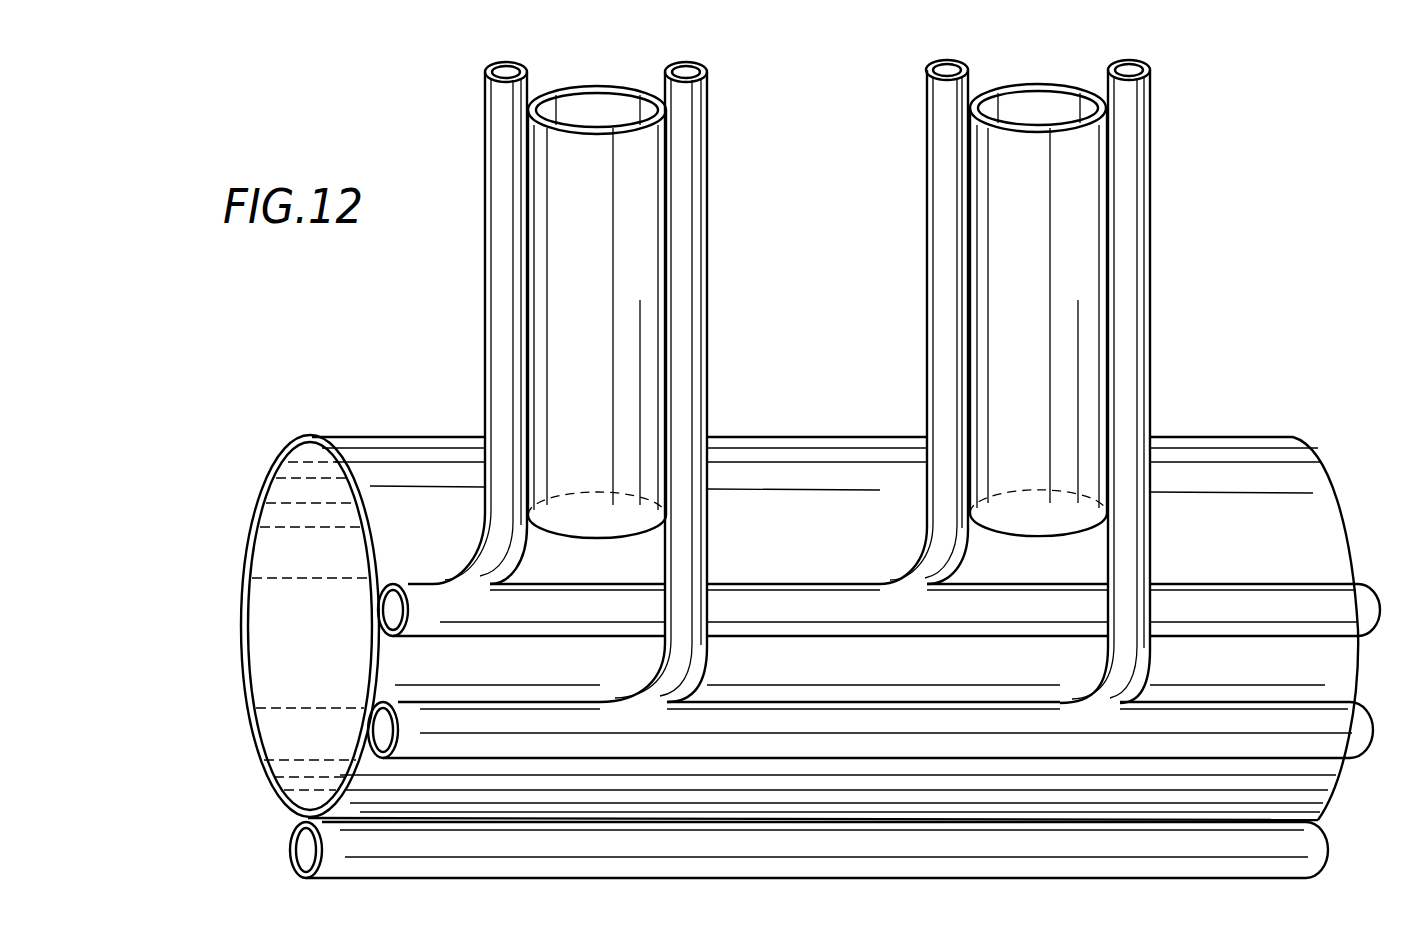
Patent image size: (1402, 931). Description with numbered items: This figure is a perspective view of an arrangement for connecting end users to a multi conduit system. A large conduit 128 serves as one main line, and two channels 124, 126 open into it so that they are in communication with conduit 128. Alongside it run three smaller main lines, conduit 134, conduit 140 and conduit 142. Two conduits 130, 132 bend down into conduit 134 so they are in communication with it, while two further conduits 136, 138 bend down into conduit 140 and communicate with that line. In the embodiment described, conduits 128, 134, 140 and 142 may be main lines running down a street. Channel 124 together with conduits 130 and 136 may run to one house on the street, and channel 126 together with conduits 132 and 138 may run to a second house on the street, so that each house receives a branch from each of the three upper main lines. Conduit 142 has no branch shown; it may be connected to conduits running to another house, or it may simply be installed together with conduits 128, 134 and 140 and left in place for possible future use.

The channel 124 is at (597, 108).
The channel 126 is at (1040, 108).
The conduit 128 is at (283, 522).
The conduit 130 is at (497, 307).
The conduit 132 is at (940, 182).
The conduit 134 is at (770, 600).
The conduit 136 is at (683, 337).
The conduit 138 is at (1135, 295).
The conduit 140 is at (761, 740).
The conduit 142 is at (963, 830).